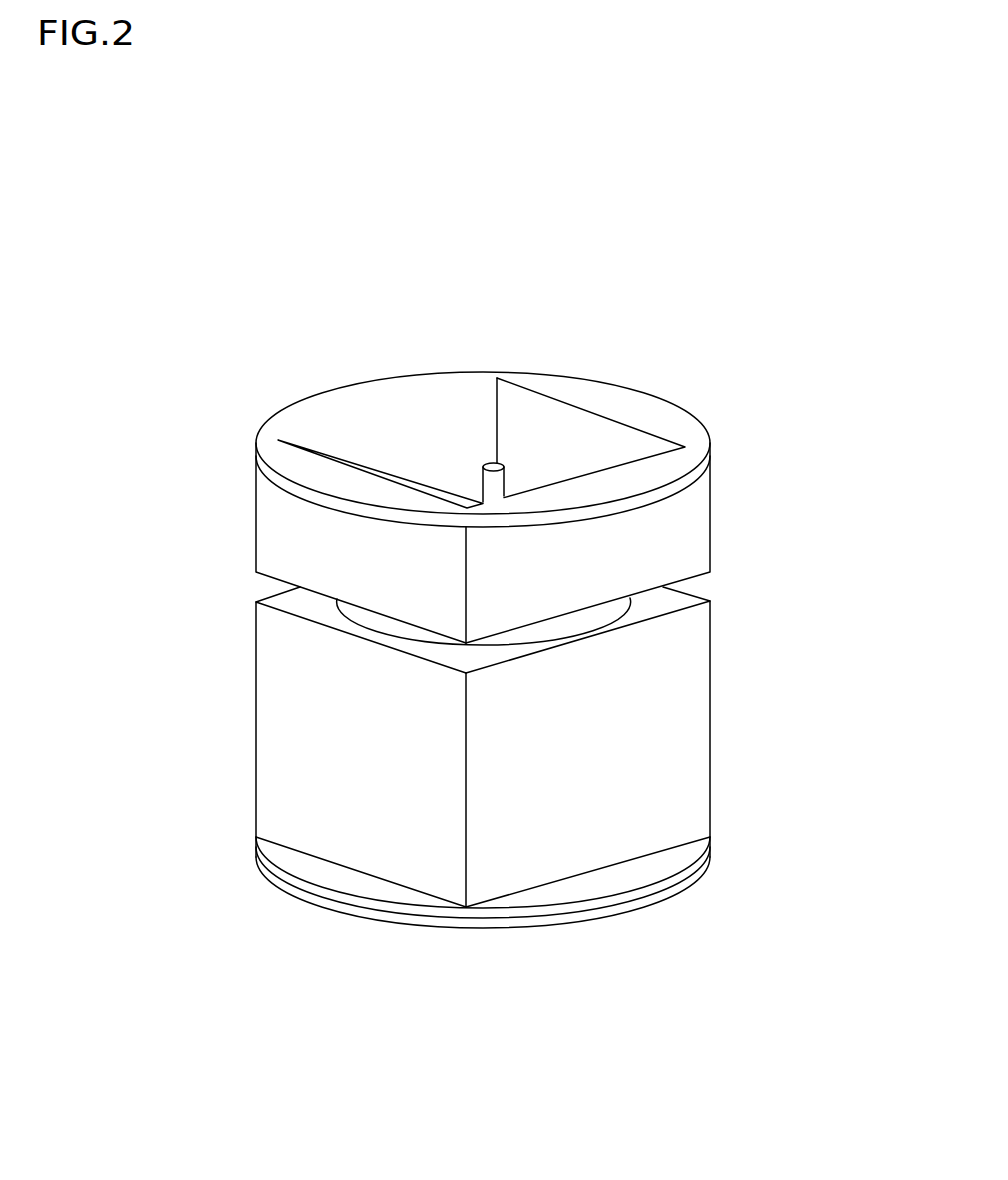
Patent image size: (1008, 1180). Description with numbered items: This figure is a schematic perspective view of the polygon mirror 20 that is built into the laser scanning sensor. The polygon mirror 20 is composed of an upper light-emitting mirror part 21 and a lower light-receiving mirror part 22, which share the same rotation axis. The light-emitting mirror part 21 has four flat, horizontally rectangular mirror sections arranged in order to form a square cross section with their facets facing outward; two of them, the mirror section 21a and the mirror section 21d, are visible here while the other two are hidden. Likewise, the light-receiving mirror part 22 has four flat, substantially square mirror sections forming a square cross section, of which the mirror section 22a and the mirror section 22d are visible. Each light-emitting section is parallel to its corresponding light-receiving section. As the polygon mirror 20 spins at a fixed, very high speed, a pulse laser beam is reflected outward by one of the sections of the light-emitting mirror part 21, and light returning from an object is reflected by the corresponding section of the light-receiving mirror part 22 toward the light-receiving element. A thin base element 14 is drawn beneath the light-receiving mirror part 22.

The polygon mirror 20 is at (233, 270).
The light-emitting mirror part 21 is at (508, 504).
The mirror section 21a is at (683, 543).
The mirror section 21d is at (277, 542).
The light-receiving mirror part 22 is at (508, 738).
The mirror section 22a is at (673, 779).
The mirror section 22d is at (278, 788).
The base plate 14 is at (642, 906).